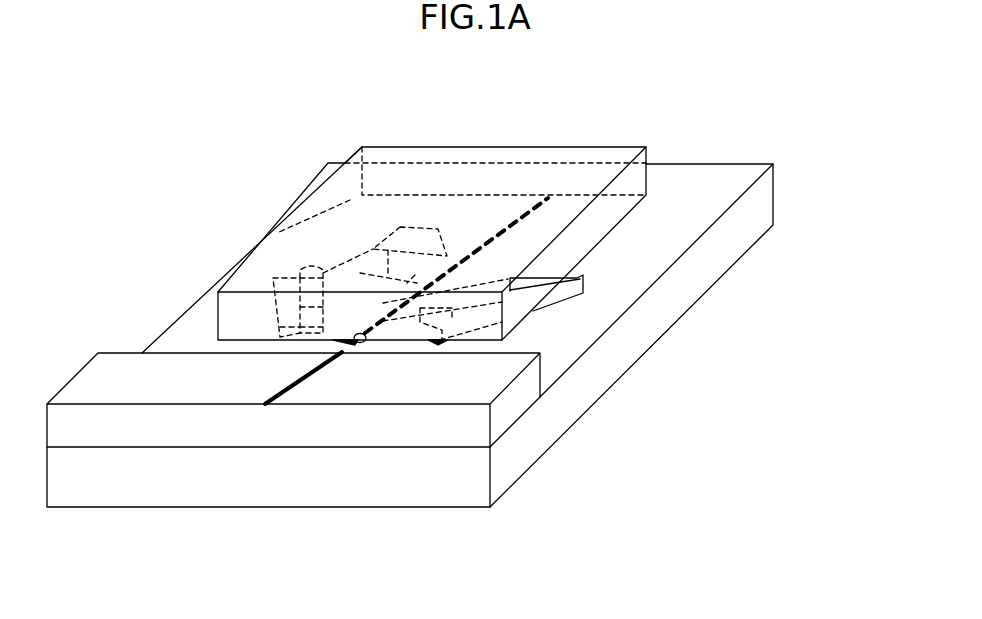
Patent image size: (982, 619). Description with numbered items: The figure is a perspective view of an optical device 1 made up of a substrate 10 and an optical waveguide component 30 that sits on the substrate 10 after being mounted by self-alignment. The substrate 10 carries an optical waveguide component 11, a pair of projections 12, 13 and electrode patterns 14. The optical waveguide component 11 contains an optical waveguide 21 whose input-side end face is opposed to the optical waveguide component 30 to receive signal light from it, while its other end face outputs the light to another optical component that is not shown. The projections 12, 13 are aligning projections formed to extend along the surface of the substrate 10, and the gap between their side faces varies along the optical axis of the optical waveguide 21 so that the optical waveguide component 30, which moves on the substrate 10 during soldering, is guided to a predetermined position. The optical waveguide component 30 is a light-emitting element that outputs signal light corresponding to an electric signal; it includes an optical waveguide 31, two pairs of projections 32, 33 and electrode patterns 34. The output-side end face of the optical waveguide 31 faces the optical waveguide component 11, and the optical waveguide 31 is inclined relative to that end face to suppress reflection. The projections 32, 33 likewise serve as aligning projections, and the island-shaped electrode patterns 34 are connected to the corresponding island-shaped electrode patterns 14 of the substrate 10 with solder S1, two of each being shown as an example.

The optical device 1 is at (852, 95).
The substrate 10 is at (773, 195).
The optical waveguide component 11 is at (515, 399).
The projection 12 is at (583, 293).
The projection 13 is at (300, 272).
The electrode pattern 14 is at (480, 285).
The optical waveguide 21 is at (309, 378).
The optical waveguide component 30 is at (647, 157).
The optical waveguide 31 is at (512, 228).
The projection 32 is at (545, 215).
The projection 33 is at (306, 268).
The electrode pattern 34 is at (335, 292).
The solder S1 is at (352, 318).